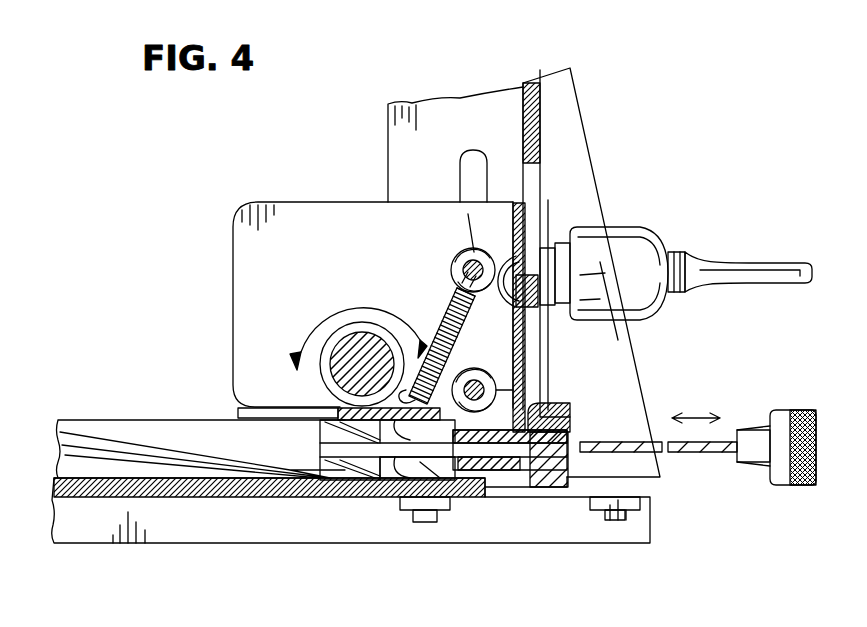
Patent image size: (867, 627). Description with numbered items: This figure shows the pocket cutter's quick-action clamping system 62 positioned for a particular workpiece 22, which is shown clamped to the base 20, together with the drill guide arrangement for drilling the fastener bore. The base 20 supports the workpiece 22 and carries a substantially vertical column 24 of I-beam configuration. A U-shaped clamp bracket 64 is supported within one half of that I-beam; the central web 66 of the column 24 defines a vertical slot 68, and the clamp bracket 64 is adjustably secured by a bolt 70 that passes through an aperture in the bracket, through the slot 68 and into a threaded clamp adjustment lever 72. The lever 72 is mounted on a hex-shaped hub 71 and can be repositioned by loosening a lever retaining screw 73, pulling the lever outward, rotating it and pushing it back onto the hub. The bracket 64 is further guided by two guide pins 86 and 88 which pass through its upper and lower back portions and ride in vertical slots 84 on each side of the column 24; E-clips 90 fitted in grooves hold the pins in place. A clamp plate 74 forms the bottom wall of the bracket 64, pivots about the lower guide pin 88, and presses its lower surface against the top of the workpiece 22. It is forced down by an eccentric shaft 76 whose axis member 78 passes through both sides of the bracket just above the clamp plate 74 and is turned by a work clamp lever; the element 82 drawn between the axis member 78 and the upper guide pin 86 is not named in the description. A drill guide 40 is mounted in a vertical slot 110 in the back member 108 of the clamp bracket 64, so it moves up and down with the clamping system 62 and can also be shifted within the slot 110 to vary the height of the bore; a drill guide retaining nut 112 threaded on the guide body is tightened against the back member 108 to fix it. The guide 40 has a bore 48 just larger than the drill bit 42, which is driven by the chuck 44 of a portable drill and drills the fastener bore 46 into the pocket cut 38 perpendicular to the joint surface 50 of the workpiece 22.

The base 20 is at (78, 538).
The workpiece 22 is at (68, 438).
The column 24 is at (609, 313).
The pocket cut 38 is at (304, 450).
The drill guide 40 is at (496, 470).
The drill bit 42 is at (702, 455).
The chuck 44 is at (790, 470).
The fastener bore 46 is at (332, 450).
The bore 48 is at (446, 458).
The joint surface 50 is at (380, 458).
The quick-action clamping system 62 is at (373, 305).
The clamp bracket 64 is at (272, 202).
The central web 66 is at (540, 130).
The vertical slot 68 is at (533, 190).
The bolt 70 is at (545, 290).
The hex-shaped hub 71 is at (572, 290).
The clamp adjustment lever 72 is at (770, 263).
The lever retaining screw 73 is at (690, 262).
The clamp plate 74 is at (270, 408).
The eccentric shaft 76 is at (310, 322).
The axis member 78 is at (360, 330).
The spring 82 is at (440, 302).
The vertical slots 84 is at (476, 150).
The guide pin 86 is at (470, 248).
The guide pin 88 is at (497, 392).
The E-clips 90 is at (463, 262).
The back member 108 is at (517, 232).
The vertical slot 110 is at (566, 418).
The drill guide retaining nut 112 is at (538, 497).